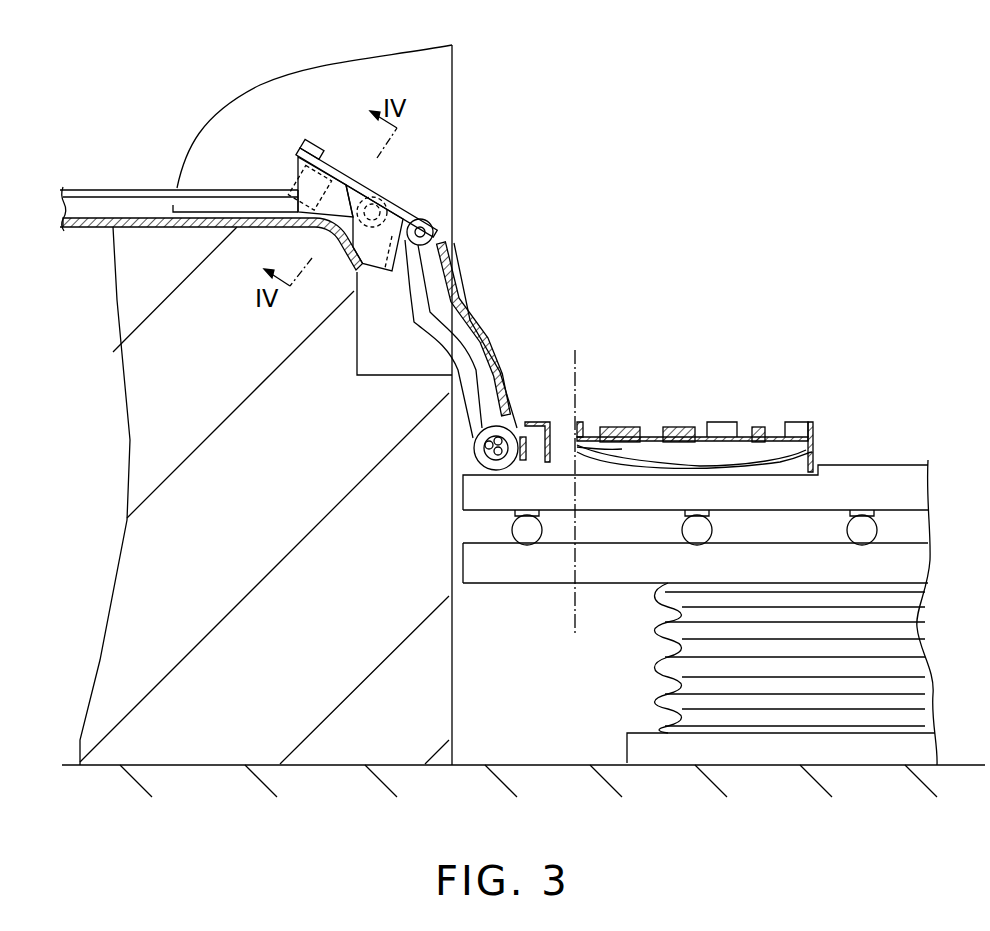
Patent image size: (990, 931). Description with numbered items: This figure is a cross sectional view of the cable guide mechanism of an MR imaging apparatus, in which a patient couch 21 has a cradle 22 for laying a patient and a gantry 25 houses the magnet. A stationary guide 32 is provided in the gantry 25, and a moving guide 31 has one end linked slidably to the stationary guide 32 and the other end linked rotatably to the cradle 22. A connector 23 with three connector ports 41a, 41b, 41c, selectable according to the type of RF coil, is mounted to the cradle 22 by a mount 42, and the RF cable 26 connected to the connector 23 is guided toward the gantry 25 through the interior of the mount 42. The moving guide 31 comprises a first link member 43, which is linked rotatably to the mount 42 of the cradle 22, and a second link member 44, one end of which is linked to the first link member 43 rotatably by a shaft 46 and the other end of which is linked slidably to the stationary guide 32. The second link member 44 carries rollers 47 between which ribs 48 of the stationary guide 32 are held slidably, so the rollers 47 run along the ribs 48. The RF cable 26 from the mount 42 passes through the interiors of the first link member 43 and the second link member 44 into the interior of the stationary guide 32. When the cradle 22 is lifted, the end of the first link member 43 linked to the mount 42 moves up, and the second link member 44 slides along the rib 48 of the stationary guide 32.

The patient couch 21 is at (768, 318).
The cradle 22 is at (898, 463).
The connector 23 is at (780, 366).
The gantry 25 is at (452, 697).
The RF cable 26 is at (217, 210).
The moving guide 31 is at (462, 196).
The stationary guide 32 is at (104, 186).
The connector port 41a is at (630, 428).
The connector port 41b is at (685, 430).
The connector port 41c is at (758, 430).
The mount 42 is at (543, 420).
The first link member 43 is at (455, 287).
The second link member 44 is at (390, 188).
The shaft 46 is at (440, 249).
The rollers 47 is at (305, 178).
The ribs 48 is at (148, 190).